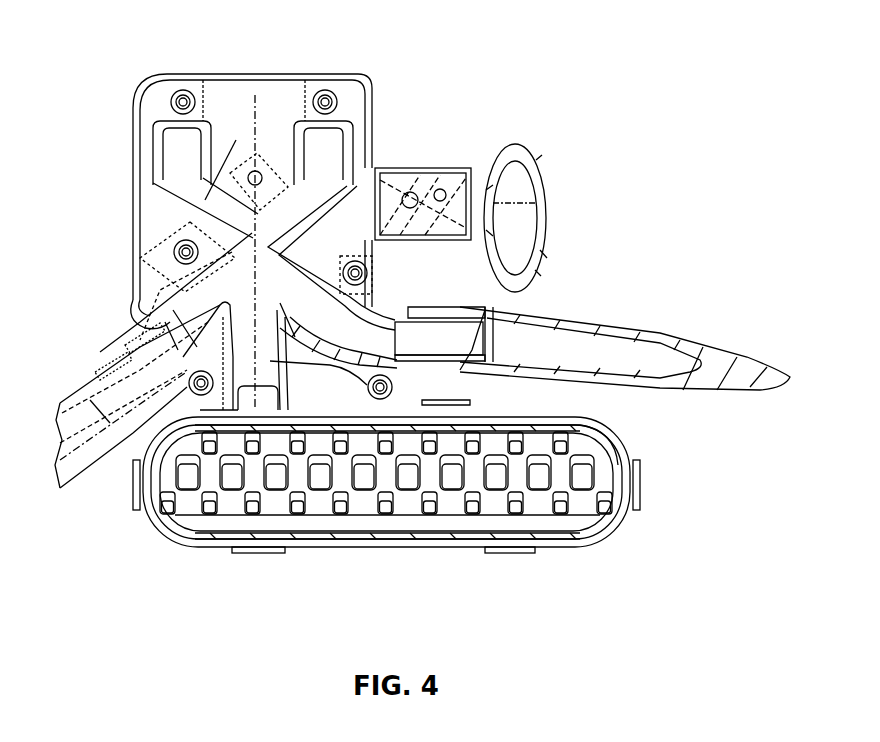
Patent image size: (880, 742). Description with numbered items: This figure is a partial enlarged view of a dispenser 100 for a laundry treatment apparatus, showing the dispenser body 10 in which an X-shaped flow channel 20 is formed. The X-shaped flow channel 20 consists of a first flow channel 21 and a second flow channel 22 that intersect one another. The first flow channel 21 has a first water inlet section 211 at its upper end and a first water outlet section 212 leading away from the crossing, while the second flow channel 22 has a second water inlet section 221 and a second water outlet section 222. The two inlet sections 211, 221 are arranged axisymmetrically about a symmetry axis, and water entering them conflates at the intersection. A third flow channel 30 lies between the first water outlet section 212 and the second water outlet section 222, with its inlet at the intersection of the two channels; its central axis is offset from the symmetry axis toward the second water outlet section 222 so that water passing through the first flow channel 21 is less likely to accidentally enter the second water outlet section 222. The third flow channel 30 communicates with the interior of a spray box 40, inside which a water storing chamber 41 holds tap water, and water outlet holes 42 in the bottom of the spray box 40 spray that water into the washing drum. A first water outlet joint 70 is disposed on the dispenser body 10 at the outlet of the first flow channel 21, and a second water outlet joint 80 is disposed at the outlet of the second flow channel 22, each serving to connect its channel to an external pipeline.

The dispenser body 10 is at (135, 157).
The dispenser 100 is at (117, 207).
The X-shaped flow channel 20 is at (195, 218).
The first flow channel 21 is at (356, 137).
The first water inlet section 211 is at (380, 168).
The first water outlet section 212 is at (150, 305).
The second flow channel 22 is at (155, 141).
The second water inlet section 221 is at (222, 142).
The second water outlet section 222 is at (335, 328).
The third flow channel 30 is at (393, 387).
The spray box 40 is at (578, 545).
The water storing chamber 41 is at (587, 452).
The water outlet hole 42 is at (472, 505).
The first water outlet joint 70 is at (105, 370).
The second water outlet joint 80 is at (486, 318).